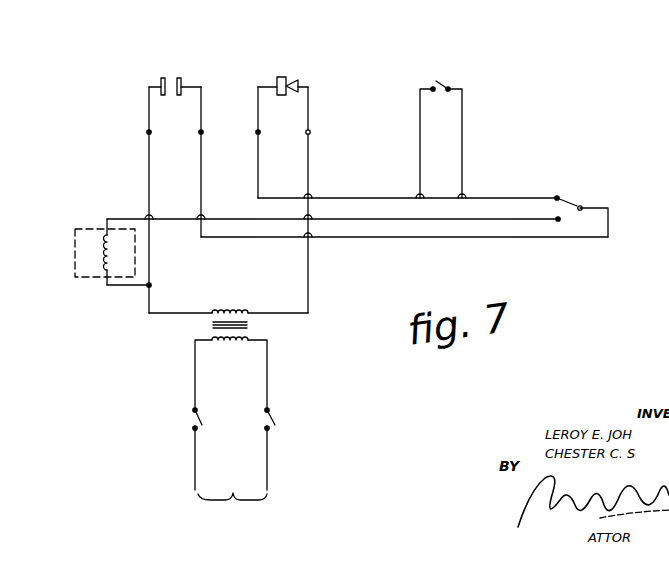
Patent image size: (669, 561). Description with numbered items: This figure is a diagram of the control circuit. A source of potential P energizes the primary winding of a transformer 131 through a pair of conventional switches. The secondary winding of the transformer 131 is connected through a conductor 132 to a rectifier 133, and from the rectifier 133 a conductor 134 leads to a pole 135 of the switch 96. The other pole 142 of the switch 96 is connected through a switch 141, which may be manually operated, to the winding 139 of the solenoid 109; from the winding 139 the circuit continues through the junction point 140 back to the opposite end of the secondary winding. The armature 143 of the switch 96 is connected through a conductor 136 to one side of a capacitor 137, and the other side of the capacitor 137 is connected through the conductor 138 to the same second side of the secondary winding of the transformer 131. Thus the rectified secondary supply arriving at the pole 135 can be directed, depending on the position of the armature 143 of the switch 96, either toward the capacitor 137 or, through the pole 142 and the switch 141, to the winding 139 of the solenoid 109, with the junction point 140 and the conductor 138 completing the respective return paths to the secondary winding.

The switch 96 is at (584, 190).
The solenoid 109 is at (73, 273).
The transformer 131 is at (250, 324).
The conductor 132 is at (308, 170).
The rectifier 133 is at (282, 73).
The conductor 134 is at (258, 182).
The pole 135 is at (557, 198).
The conductor 136 is at (370, 237).
The capacitor 137 is at (170, 75).
The conductor 138 is at (149, 190).
The winding 139 is at (100, 250).
The junction point 140 is at (149, 284).
The switch 141 is at (443, 73).
The pole 142 is at (558, 219).
The armature 143 is at (582, 207).
The source of potential P is at (225, 503).